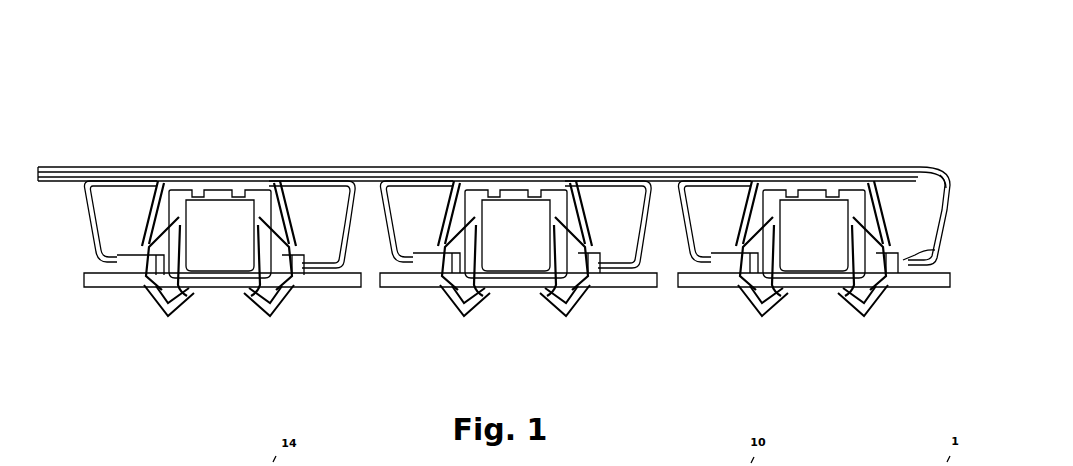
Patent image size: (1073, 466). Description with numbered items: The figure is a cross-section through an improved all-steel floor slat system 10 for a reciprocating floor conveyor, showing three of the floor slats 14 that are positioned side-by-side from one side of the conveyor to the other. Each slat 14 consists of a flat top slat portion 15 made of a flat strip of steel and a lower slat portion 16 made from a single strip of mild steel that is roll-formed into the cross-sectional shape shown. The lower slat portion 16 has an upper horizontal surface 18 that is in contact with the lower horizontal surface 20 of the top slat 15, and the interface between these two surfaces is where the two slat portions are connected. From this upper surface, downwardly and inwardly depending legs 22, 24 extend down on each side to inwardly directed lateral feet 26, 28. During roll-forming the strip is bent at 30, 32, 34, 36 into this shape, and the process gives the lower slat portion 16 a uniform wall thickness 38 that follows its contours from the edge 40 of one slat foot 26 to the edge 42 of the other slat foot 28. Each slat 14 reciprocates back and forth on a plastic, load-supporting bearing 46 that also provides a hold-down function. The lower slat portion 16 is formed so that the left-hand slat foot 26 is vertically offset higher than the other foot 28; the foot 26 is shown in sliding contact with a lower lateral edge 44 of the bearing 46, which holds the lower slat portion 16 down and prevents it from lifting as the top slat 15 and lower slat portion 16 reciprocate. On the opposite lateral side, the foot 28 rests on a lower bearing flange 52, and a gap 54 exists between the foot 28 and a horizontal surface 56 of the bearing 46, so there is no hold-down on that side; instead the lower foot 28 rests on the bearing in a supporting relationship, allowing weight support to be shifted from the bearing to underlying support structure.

The all-steel floor slat system 10 is at (527, 146).
The floor slat 14 is at (245, 157).
The top slat portion 15 is at (135, 168).
The lower slat portion 16 is at (101, 214).
The upper horizontal surface 18 is at (152, 178).
The lower horizontal surface 20 is at (205, 178).
The leg 22 is at (390, 215).
The leg 24 is at (664, 210).
The slat foot 26 is at (122, 262).
The slat foot 28 is at (331, 283).
The bend 30 is at (696, 182).
The bend 32 is at (950, 194).
The bend 34 is at (712, 262).
The bend 36 is at (896, 255).
The uniform wall thickness 38 is at (341, 229).
The edge 40 is at (173, 300).
The edge 42 is at (275, 310).
The lower lateral edge 44 is at (440, 259).
The bearing 46 is at (271, 188).
The lower bearing flange 52 is at (630, 276).
The gap 54 is at (902, 257).
The horizontal surface 56 is at (605, 268).